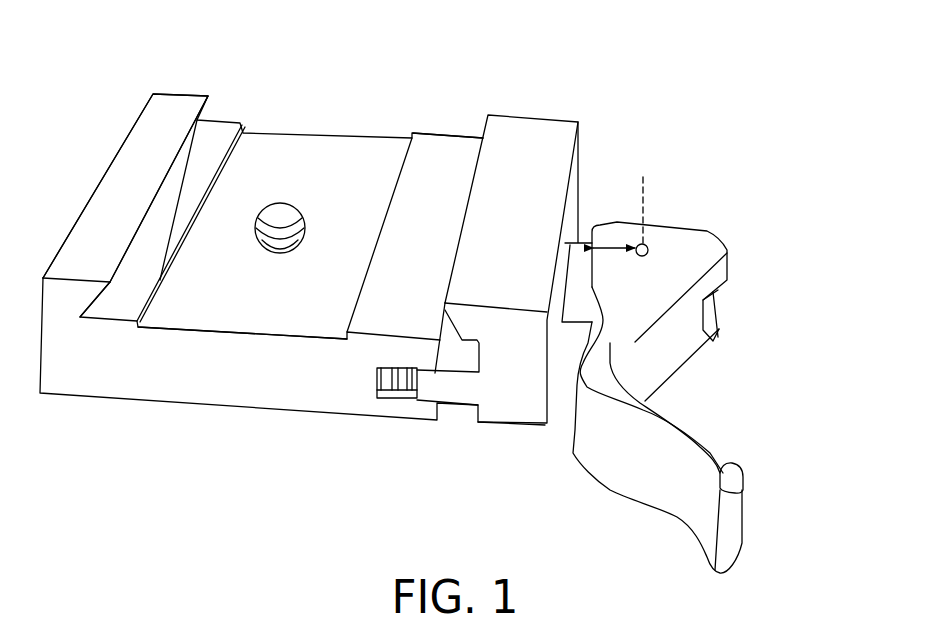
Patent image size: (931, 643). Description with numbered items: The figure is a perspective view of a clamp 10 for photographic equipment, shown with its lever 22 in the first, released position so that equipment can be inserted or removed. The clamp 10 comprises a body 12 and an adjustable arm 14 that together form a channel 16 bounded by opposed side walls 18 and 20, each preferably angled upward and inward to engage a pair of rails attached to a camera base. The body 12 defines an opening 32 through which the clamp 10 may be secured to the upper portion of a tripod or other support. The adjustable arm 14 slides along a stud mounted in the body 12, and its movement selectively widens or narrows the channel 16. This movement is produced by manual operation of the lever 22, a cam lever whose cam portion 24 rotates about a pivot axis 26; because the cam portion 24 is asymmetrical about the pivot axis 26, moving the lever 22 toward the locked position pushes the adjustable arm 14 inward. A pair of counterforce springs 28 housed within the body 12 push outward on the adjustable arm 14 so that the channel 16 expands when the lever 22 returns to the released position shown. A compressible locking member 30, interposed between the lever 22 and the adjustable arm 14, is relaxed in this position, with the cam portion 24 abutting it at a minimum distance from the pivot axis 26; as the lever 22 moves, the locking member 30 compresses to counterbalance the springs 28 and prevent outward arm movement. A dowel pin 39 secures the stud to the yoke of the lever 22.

The clamp 10 is at (377, 110).
The body 12 is at (207, 381).
The adjustable arm 14 is at (490, 224).
The channel 16 is at (280, 307).
The side wall 18 is at (192, 135).
The side wall 20 is at (480, 157).
The lever 22 is at (607, 347).
The cam portion 24 is at (682, 257).
The pivot axis 26 is at (643, 243).
The counterforce springs 28 is at (397, 388).
The locking member 30 is at (585, 232).
The opening 32 is at (280, 203).
The dowel pin 39 is at (677, 260).